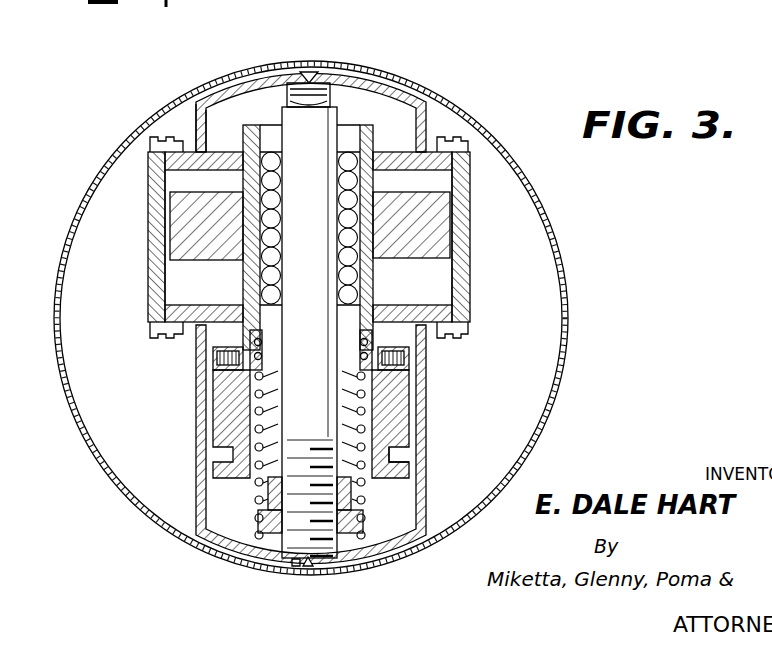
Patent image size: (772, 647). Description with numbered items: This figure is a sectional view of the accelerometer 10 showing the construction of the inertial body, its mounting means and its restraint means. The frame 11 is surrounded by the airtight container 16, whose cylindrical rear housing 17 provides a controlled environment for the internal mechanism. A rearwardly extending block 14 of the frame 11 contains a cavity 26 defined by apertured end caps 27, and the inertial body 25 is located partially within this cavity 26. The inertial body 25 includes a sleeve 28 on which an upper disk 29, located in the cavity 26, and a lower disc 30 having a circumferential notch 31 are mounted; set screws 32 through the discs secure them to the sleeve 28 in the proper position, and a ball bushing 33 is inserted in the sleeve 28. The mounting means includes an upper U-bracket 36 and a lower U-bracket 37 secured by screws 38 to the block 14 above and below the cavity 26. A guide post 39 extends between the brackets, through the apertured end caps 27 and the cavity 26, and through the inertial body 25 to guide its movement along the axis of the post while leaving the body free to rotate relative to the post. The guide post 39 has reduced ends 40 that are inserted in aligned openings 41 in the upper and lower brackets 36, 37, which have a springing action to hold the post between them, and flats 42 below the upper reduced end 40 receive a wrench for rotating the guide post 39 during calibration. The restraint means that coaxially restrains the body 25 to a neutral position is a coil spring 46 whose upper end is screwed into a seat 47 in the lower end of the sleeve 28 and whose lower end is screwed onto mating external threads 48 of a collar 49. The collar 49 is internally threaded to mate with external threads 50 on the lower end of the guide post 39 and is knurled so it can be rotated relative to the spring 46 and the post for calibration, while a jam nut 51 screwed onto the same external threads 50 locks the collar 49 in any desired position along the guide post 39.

The accelerometer 10 is at (357, 318).
The frame 11 is at (293, 215).
The rearwardly extending block 14 is at (460, 192).
The airtight container 16 is at (572, 324).
The cylindrical rear housing 17 is at (560, 270).
The inertial body 25 is at (167, 250).
The cavity 26 is at (150, 170).
The apertured end caps 27 is at (165, 312).
The sleeve 28 is at (378, 289).
The upper disk 29 is at (430, 228).
The lower disc 30 is at (390, 397).
The circumferential notch 31 is at (398, 460).
The set screws 32 is at (232, 363).
The ball bushing 33 is at (250, 139).
The upper U-bracket 36 is at (382, 92).
The lower U-bracket 37 is at (232, 548).
The screws 38 is at (455, 135).
The guide post 39 is at (306, 268).
The reduced ends 40 is at (326, 73).
The openings 41 is at (300, 80).
The flats 42 is at (290, 80).
The coil spring 46 is at (255, 412).
The seat 47 is at (258, 340).
The external threads 48 is at (363, 522).
The collar 49 is at (262, 512).
The external threads 50 is at (298, 440).
The jam nut 51 is at (265, 493).